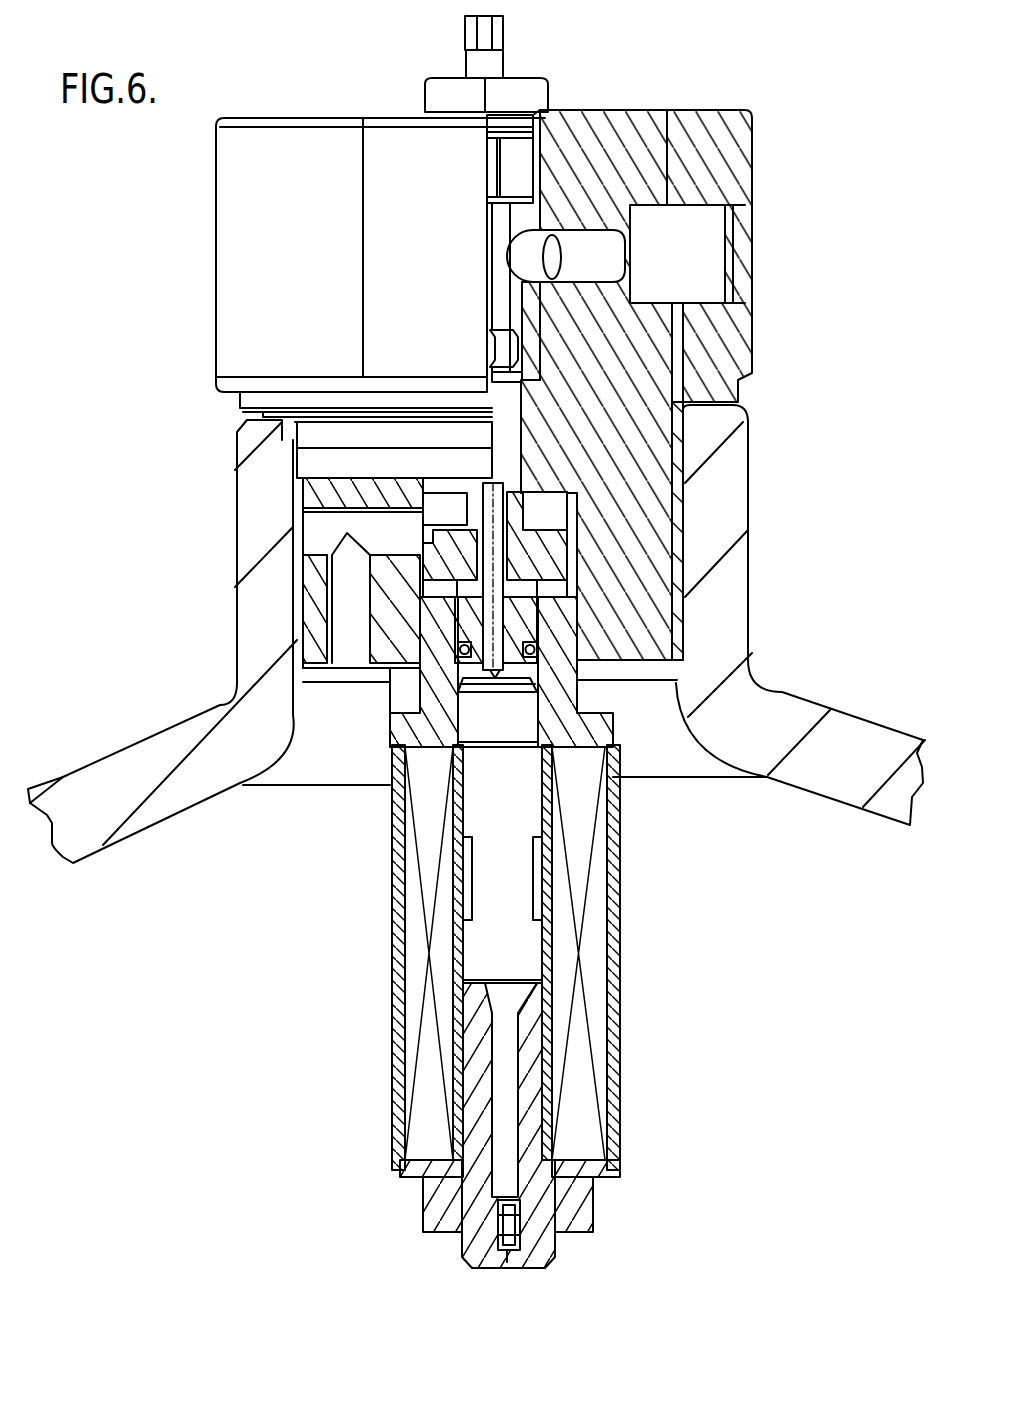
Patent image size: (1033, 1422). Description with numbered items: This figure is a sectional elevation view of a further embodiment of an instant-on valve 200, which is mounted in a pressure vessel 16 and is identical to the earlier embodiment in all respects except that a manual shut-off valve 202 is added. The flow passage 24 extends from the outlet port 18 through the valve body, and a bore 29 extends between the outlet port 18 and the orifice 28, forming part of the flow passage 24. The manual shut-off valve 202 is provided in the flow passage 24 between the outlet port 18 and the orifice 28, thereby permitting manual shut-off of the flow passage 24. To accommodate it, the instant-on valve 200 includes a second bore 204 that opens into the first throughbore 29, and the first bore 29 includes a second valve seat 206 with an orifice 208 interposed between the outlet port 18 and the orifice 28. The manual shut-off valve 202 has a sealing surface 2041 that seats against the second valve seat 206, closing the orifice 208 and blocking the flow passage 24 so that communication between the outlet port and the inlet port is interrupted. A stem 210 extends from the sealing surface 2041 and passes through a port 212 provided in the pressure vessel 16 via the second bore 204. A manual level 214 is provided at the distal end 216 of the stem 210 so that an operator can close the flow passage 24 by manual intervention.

The instant-on valve 200 is at (305, 170).
The manual level 214 is at (492, 27).
The distal end 216 is at (503, 133).
The port 212 is at (547, 112).
The second bore 204 is at (547, 140).
The manual shut-off valve 202 is at (520, 218).
The outlet port 18 is at (712, 252).
The stem 210 is at (492, 277).
The flow passage 24 is at (520, 323).
The sealing surface 2041 is at (490, 362).
The orifice 208 is at (480, 400).
The second valve seat 206 is at (530, 380).
The bore 29 is at (520, 442).
The orifice 28 is at (507, 470).
The pressure vessel 16 is at (835, 742).